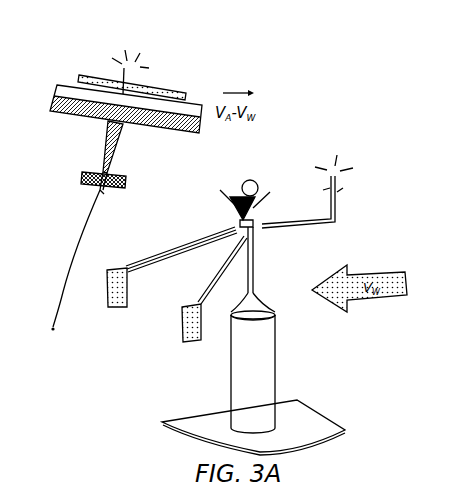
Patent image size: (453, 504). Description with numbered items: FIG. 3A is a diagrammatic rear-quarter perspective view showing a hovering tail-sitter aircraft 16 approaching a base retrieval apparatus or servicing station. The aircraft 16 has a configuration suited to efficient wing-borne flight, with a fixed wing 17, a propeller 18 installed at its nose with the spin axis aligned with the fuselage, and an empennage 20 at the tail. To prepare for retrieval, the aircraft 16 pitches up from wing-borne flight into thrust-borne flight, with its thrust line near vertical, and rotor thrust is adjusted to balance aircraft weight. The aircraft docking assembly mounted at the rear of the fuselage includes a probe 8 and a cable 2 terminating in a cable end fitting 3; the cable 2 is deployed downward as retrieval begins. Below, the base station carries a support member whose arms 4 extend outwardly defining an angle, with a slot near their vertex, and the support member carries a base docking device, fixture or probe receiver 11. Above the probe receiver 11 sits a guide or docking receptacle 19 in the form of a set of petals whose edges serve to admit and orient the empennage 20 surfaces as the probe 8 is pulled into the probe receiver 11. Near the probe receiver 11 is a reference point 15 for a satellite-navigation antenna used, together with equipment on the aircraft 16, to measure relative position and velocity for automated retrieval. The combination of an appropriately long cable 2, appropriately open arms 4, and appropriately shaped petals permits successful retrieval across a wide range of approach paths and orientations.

The cable 2 is at (53, 255).
The cable end fitting 3 is at (64, 334).
The arms 4 is at (136, 240).
The probe 8 is at (113, 203).
The base docking device, fixture or probe receiver 11 is at (232, 214).
The reference point 15 is at (347, 181).
The aircraft 16 is at (125, 150).
The fixed wing 17 is at (67, 80).
The propeller 18 is at (168, 90).
The guide or docking receptacle 19 is at (262, 170).
The empennage 20 is at (76, 170).